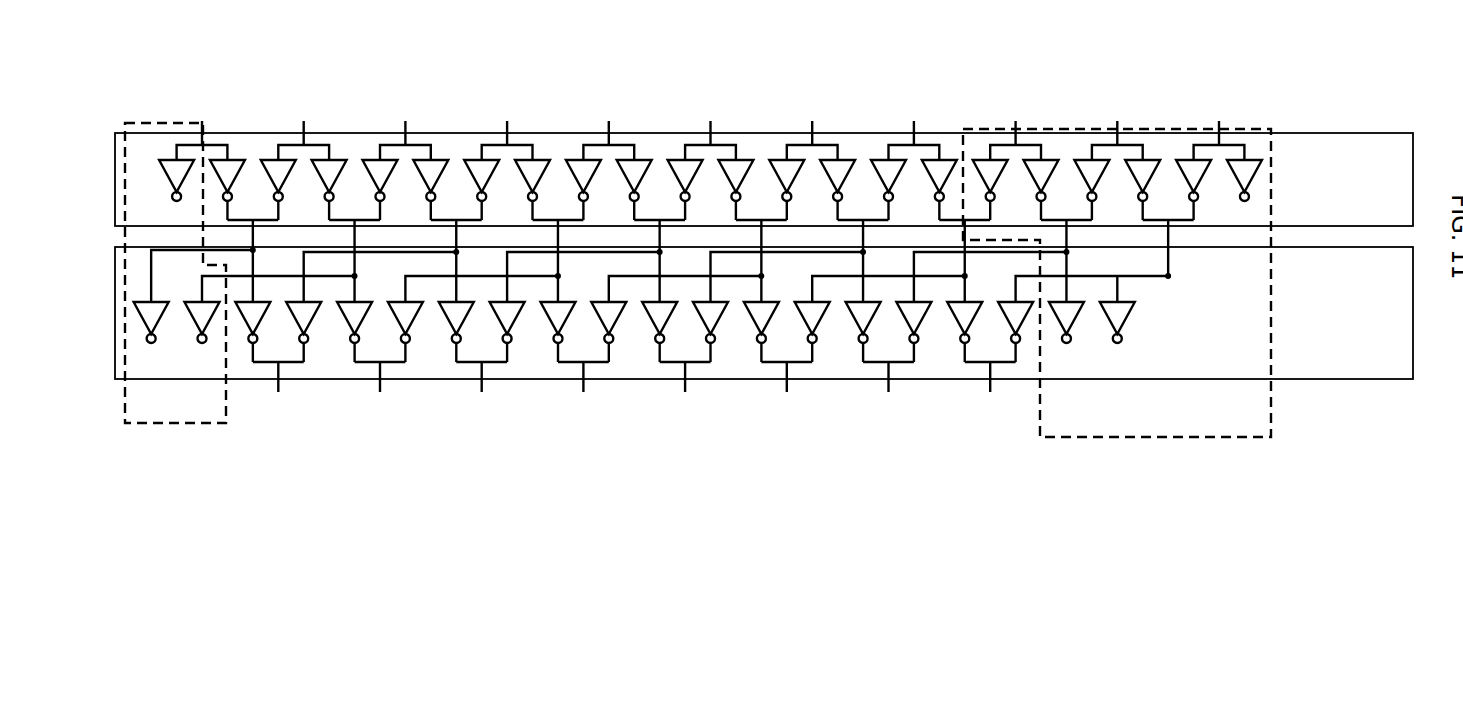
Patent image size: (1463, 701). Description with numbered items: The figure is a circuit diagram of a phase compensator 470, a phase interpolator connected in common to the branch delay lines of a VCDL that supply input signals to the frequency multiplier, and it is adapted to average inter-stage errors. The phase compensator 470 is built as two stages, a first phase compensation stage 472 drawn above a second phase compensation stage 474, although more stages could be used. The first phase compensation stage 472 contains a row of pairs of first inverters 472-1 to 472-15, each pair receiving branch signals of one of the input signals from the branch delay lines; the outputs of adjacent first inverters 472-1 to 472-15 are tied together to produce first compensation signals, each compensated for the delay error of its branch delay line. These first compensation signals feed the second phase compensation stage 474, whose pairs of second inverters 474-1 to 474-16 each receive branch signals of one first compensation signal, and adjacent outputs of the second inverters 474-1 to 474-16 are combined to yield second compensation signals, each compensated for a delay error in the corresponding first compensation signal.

The phase compensator 470 is at (758, 86).
The first phase compensation stage 472 is at (1292, 134).
The first inverter 472-1 is at (236, 157).
The first inverter 472-15 is at (948, 157).
The second phase compensation stage 474 is at (1292, 380).
The second inverter 474-1 is at (240, 320).
The second inverter 474-16 is at (1019, 325).